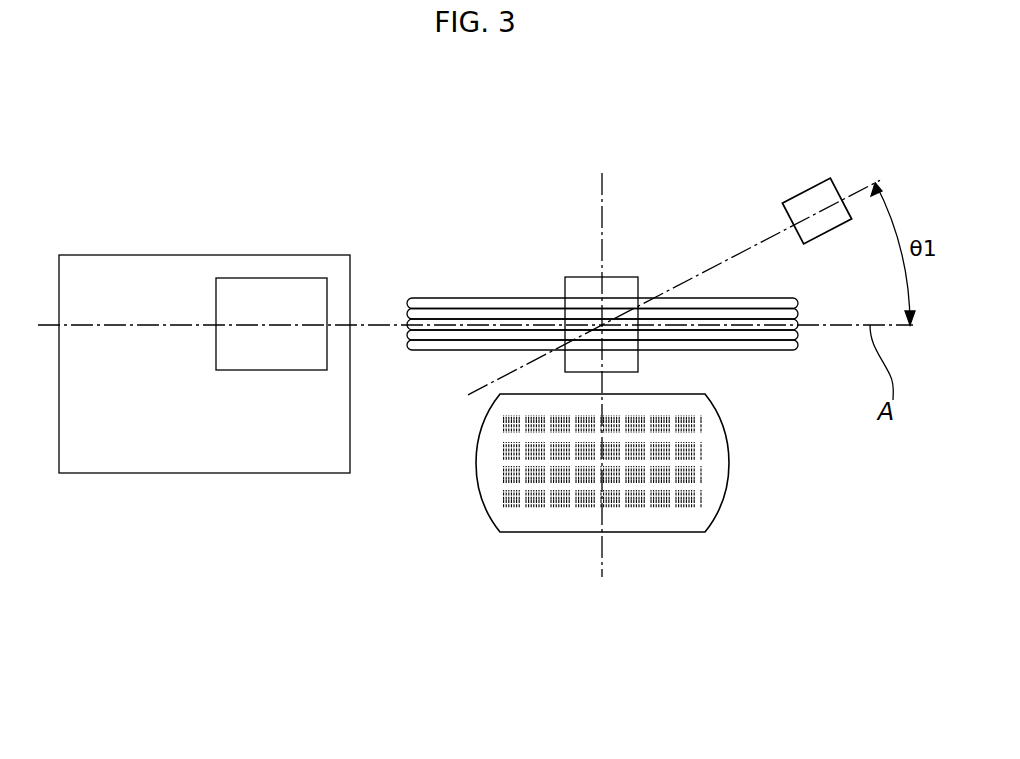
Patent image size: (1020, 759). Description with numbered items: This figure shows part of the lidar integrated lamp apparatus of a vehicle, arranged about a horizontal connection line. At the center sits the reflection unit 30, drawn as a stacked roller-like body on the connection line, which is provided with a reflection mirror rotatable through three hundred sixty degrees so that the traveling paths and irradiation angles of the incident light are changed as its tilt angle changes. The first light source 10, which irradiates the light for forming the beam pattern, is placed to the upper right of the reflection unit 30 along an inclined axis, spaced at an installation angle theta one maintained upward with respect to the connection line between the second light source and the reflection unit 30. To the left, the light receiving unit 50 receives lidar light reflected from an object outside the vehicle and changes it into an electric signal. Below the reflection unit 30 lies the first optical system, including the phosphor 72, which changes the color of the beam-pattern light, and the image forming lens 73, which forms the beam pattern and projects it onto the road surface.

The first light source 10 is at (801, 197).
The reflection unit 30 is at (578, 283).
The light receiving unit 50 is at (271, 286).
The phosphor 72 is at (700, 473).
The image forming lens 73 is at (692, 522).